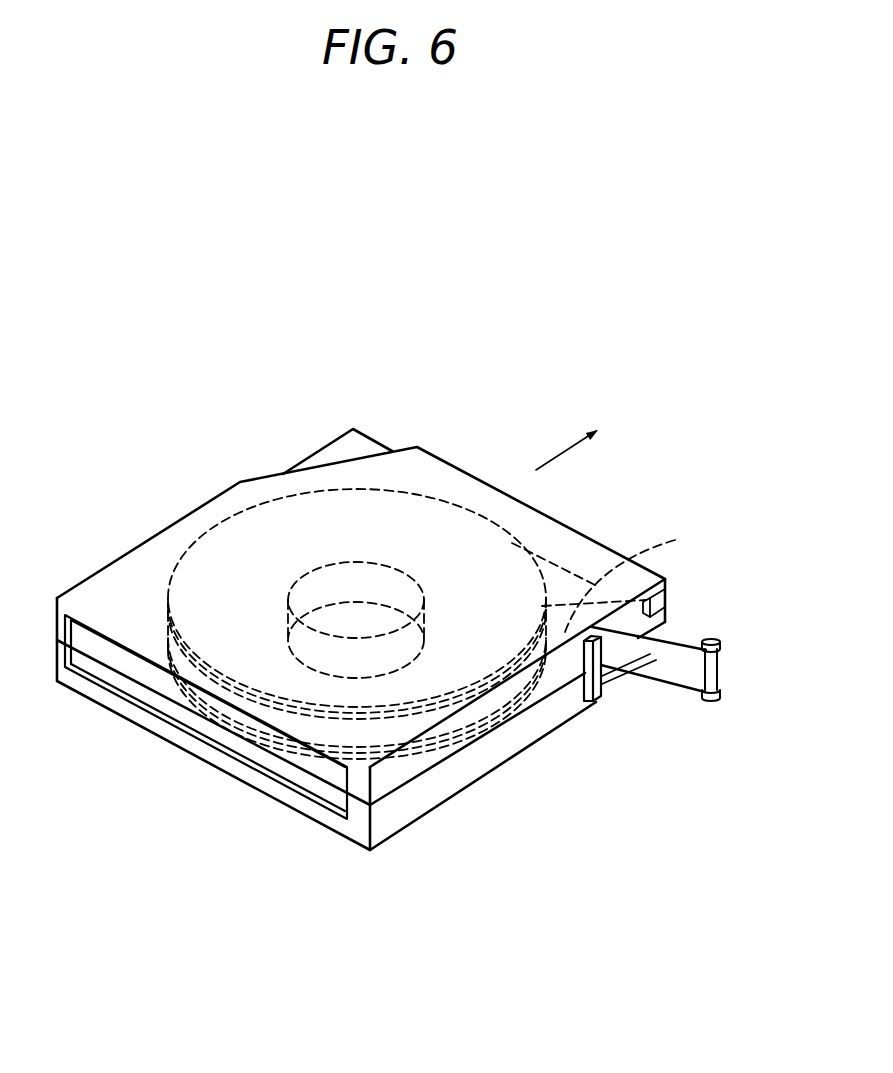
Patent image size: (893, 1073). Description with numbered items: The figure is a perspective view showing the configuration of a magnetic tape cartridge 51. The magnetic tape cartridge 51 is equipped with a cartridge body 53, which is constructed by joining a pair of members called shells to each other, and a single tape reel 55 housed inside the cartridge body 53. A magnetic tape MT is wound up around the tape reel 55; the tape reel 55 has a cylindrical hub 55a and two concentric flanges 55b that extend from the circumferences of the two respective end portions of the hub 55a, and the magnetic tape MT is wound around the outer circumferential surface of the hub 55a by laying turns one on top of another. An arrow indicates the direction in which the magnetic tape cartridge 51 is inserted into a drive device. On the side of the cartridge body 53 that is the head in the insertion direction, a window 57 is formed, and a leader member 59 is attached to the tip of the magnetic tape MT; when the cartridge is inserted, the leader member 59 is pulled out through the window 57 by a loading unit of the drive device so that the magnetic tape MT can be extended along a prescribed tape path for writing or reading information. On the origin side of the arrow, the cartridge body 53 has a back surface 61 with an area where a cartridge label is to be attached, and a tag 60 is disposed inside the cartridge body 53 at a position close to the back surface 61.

The magnetic tape cartridge 51 is at (467, 411).
The cartridge body 53 is at (576, 548).
The tape reel 55 is at (368, 489).
The hub 55a is at (345, 560).
The flanges 55b is at (245, 510).
The window 57 is at (618, 661).
The leader member 59 is at (718, 648).
The tag 60 is at (305, 796).
The back surface 61 is at (360, 845).
The magnetic tape MT is at (668, 638).